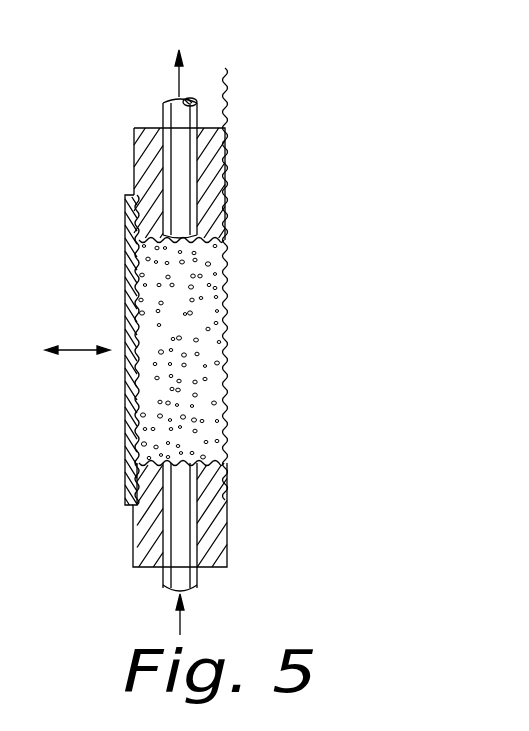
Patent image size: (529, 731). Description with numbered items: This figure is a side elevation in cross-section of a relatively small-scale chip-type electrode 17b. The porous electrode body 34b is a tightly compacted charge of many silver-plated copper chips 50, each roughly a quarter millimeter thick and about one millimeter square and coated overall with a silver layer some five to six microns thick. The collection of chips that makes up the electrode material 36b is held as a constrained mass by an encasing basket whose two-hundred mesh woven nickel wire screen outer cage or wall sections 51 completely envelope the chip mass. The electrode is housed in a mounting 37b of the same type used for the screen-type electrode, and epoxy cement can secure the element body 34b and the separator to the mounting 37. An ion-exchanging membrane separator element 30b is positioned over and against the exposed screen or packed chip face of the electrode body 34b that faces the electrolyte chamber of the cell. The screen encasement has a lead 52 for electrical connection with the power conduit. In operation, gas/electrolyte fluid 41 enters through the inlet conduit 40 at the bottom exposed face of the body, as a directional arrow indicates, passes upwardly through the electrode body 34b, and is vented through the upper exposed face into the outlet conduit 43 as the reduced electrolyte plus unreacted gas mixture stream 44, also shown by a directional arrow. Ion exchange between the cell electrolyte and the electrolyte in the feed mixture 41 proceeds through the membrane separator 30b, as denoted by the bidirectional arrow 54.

The chip-type electrode 17b is at (146, 96).
The outlet conduit 43 is at (172, 118).
The mounting 37 is at (155, 157).
The nickel wire screen wall sections 51 is at (136, 256).
The bidirectional arrow 54 is at (78, 348).
The ion-exchanging membrane separator element 30b is at (133, 443).
The reduced electrolyte plus unreacted gas mixture stream 44 is at (182, 82).
The lead 52 is at (228, 98).
The electrode material 36b is at (203, 275).
The silver-plated copper chips 50 is at (210, 348).
The porous electrode body 34b is at (230, 383).
The mounting 37b is at (215, 527).
The gas/electrolyte fluid 41 is at (176, 620).
The inlet conduit 40 is at (198, 582).